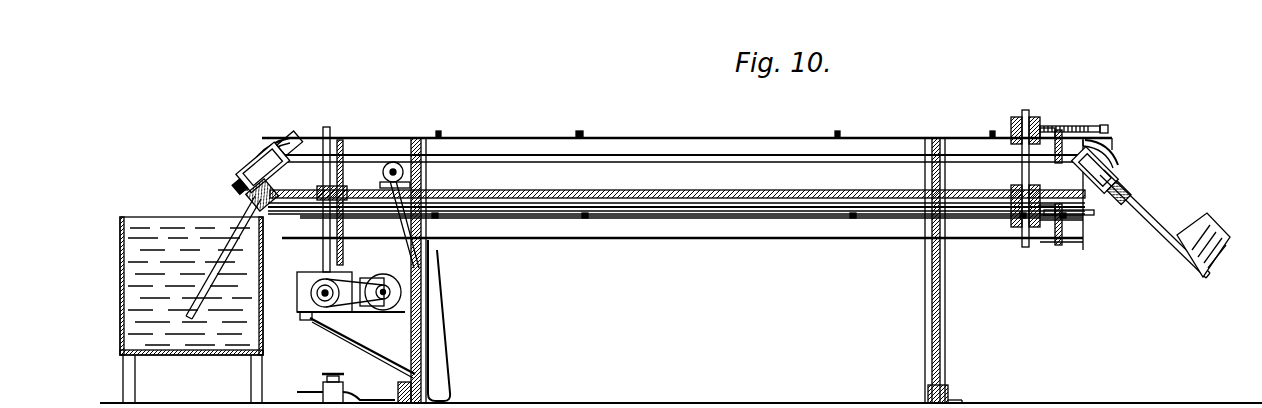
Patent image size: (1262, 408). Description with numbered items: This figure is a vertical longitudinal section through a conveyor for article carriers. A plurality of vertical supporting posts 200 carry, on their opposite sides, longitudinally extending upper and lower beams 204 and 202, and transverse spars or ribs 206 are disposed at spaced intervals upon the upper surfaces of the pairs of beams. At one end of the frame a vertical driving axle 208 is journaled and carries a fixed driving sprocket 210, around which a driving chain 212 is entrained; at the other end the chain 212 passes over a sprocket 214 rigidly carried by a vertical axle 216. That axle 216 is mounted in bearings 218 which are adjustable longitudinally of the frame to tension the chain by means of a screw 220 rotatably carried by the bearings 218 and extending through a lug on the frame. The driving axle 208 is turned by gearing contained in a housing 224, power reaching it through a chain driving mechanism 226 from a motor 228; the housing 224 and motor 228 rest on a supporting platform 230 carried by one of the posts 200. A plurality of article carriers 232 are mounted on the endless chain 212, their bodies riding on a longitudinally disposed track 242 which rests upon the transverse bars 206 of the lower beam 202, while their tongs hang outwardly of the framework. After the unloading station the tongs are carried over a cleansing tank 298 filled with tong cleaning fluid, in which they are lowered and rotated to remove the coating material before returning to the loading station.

The supporting posts 200 is at (426, 343).
The lower beam 202 is at (643, 225).
The upper beam 204 is at (665, 148).
The transverse spars or ribs 206 is at (580, 132).
The vertical driving axle 208 is at (323, 165).
The driving sprocket 210 is at (356, 195).
The driving chain 212 is at (496, 192).
The sprocket 214 is at (984, 200).
The vertical axle 216 is at (1022, 160).
The bearings 218 is at (1034, 122).
The screw 220 is at (1080, 130).
The housing 224 is at (300, 276).
The chain driving mechanism 226 is at (362, 276).
The motor 228 is at (402, 268).
The supporting platform 230 is at (340, 318).
The article carriers 232 is at (1128, 177).
The track 242 is at (732, 205).
The cleansing tank 298 is at (126, 232).